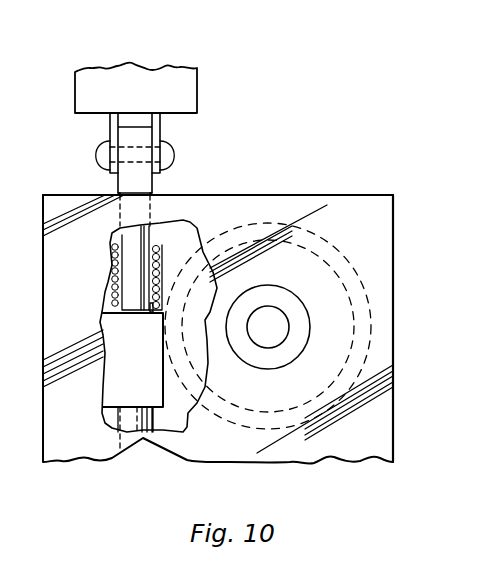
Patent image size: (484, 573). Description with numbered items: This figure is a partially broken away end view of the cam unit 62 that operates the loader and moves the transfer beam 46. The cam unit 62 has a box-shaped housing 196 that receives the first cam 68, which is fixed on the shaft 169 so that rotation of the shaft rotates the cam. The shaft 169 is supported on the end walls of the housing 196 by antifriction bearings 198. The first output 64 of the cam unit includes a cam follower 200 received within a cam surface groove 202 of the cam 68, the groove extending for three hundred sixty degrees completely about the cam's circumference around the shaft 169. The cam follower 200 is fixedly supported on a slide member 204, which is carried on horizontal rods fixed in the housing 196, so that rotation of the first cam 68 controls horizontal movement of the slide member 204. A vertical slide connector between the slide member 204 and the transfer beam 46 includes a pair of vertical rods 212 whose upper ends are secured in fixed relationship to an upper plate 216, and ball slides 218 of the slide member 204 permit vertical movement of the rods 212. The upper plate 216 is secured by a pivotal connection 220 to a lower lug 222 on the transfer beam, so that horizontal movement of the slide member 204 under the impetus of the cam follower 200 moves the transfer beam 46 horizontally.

The transfer beam 46 is at (117, 73).
The lower lug 222 is at (160, 117).
The pivotal connection 220 is at (165, 146).
The upper plate 216 is at (128, 175).
The first output 64 is at (154, 182).
The cam unit 62 is at (352, 195).
The housing 196 is at (332, 153).
The cam follower 200 is at (192, 226).
The vertical rods 212 is at (128, 250).
The ball slides 218 is at (112, 286).
The slide member 204 is at (122, 328).
The antifriction bearings 198 is at (297, 305).
The shaft 169 is at (283, 325).
The first cam 68 is at (341, 257).
The cam surface groove 202 is at (205, 383).